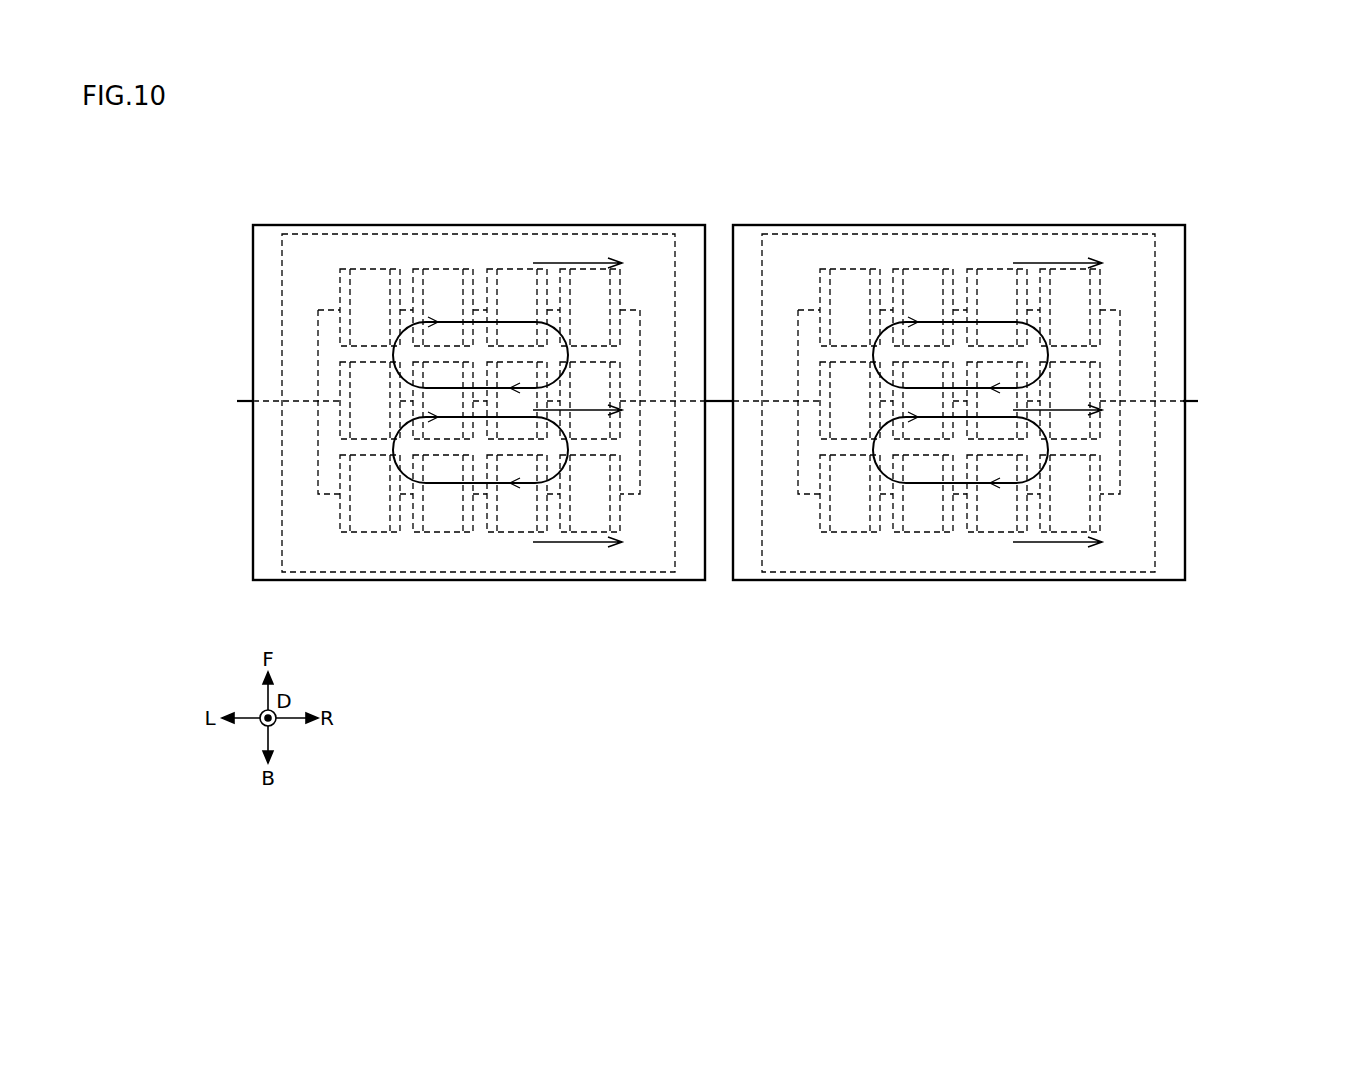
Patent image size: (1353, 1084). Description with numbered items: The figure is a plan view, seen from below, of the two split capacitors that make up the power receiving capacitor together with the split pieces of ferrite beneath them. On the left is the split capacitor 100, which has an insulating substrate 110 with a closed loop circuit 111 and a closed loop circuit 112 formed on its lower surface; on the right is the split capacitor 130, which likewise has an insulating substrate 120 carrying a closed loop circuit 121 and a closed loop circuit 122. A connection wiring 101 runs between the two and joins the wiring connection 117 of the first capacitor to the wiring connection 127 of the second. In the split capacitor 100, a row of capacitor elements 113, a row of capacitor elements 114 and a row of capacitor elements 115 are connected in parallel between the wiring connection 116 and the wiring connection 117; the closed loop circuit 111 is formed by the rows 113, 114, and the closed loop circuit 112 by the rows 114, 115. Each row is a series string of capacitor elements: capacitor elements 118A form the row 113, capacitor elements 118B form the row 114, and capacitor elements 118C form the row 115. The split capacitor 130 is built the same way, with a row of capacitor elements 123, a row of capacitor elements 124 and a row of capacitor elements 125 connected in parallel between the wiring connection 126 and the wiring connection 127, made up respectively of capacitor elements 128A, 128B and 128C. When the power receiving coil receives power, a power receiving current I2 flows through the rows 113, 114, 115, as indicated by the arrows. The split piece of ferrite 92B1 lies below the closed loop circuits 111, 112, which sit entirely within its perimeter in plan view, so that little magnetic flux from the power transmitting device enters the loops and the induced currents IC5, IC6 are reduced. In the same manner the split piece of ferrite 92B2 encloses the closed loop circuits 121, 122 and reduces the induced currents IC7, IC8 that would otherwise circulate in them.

The split capacitor 100 is at (160, 245).
The insulating substrate 110 is at (282, 258).
The closed loop circuit 111 is at (213, 302).
The closed loop circuit 112 is at (213, 443).
The row of capacitor elements 113 is at (416, 262).
The row of capacitor elements 114 is at (416, 321).
The row of capacitor elements 115 is at (416, 542).
The wiring connection 116 is at (250, 409).
The wiring connection 117 is at (673, 401).
The capacitor element 118A is at (368, 269).
The capacitor element 118B is at (450, 362).
The capacitor element 118C is at (365, 532).
The split piece of ferrite 92B1 is at (312, 225).
The induced current IC5 is at (480, 483).
The induced current IC6 is at (520, 322).
The power receiving current I2 is at (585, 263).
The connection wiring 101 is at (718, 402).
The wiring connection 127 is at (762, 401).
The split capacitor 130 is at (1278, 242).
The insulating substrate 120 is at (1155, 258).
The closed loop circuit 121 is at (1230, 300).
The closed loop circuit 122 is at (1230, 442).
The row of capacitor elements 123 is at (1025, 262).
The row of capacitor elements 124 is at (1025, 321).
The row of capacitor elements 125 is at (1025, 542).
The wiring connection 126 is at (1190, 409).
The capacitor element 128A is at (848, 269).
The capacitor element 128B is at (930, 362).
The capacitor element 128C is at (845, 532).
The split piece of ferrite 92B2 is at (792, 225).
The induced current IC7 is at (960, 483).
The induced current IC8 is at (1000, 322).